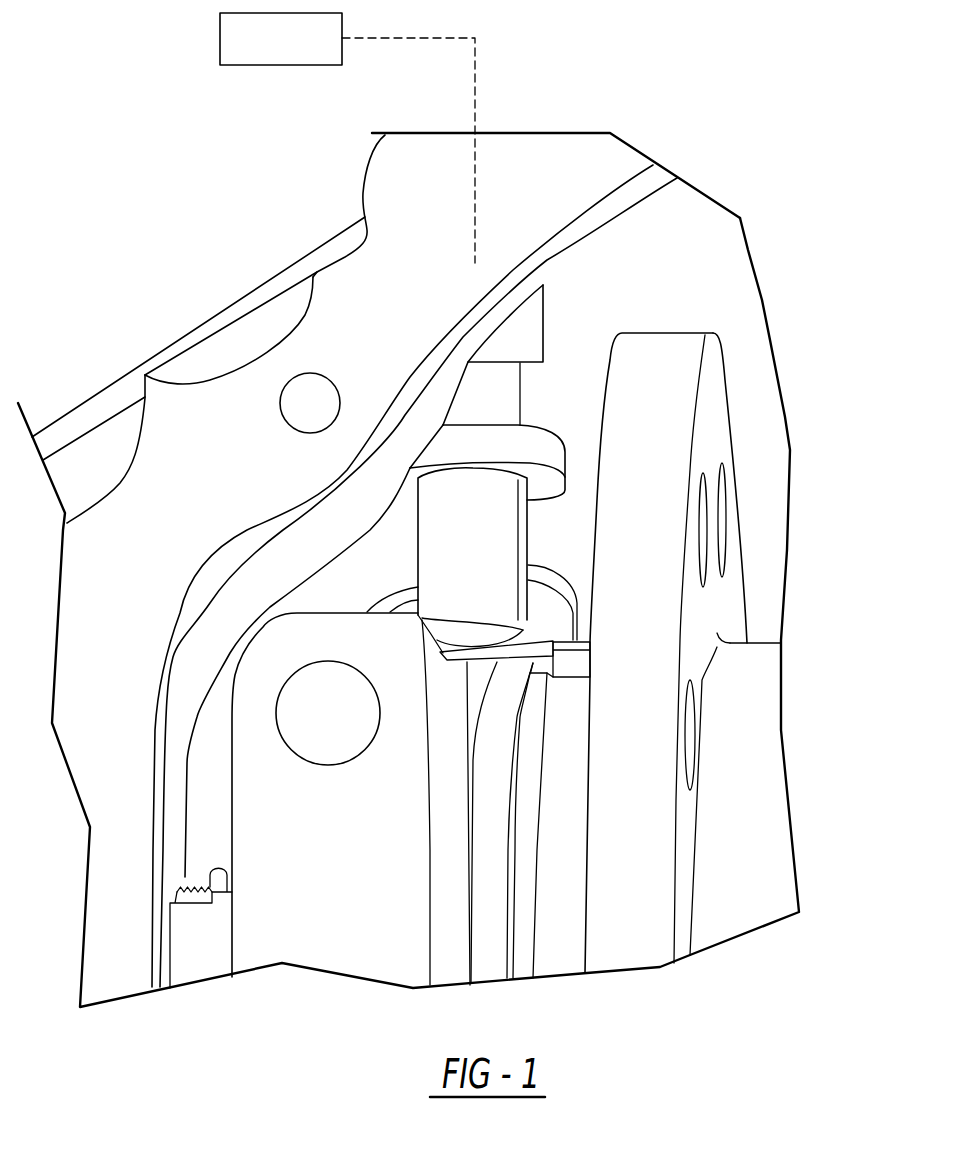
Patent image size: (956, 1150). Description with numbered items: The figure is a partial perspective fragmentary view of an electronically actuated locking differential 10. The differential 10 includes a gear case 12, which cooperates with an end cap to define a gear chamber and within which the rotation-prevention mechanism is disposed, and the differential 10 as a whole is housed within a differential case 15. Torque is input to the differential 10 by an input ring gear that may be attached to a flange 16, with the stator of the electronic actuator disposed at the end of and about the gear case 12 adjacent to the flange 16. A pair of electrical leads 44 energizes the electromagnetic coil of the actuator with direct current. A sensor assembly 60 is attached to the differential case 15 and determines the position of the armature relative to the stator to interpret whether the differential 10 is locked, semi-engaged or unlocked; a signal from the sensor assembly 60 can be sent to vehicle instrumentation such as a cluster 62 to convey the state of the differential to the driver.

The electronically actuated locking differential 10 is at (786, 272).
The gear case 12 is at (758, 693).
The differential case 15 is at (527, 165).
The flange 16 is at (660, 403).
The electrical leads 44 is at (573, 592).
The sensor assembly 60 is at (513, 397).
The cluster 62 is at (220, 33).